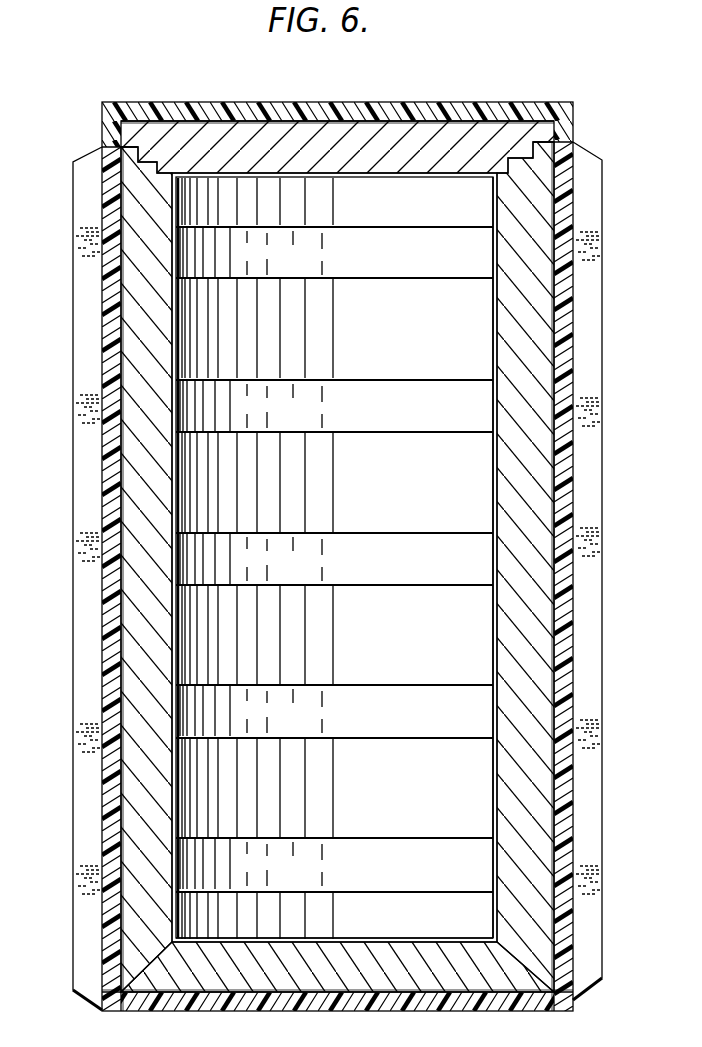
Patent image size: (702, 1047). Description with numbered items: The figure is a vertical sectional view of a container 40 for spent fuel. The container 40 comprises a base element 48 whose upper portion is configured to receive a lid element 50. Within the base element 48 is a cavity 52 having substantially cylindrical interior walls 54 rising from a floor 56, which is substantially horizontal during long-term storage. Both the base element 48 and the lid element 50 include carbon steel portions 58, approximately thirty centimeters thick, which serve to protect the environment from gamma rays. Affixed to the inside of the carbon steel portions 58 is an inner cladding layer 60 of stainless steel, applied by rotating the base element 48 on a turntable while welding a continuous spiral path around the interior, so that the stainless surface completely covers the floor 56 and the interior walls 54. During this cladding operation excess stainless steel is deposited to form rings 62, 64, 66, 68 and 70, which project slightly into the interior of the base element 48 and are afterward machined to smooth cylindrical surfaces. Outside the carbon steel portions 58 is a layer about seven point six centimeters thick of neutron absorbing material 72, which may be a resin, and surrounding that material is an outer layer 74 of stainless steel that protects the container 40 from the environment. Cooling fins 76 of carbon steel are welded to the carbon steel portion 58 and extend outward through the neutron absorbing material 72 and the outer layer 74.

The container 40 is at (652, 50).
The base element 48 is at (637, 258).
The lid element 50 is at (482, 40).
The cavity 52 is at (368, 656).
The interior walls 54 is at (493, 495).
The floor 56 is at (372, 940).
The carbon steel portions 58 is at (223, 128).
The inner cladding layer 60 is at (468, 183).
The ring 62 is at (400, 267).
The ring 64 is at (385, 418).
The ring 66 is at (402, 577).
The ring 68 is at (405, 727).
The ring 70 is at (415, 878).
The neutron absorbing material 72 is at (330, 110).
The outer layer 74 is at (528, 102).
The cooling fins 76 is at (72, 650).